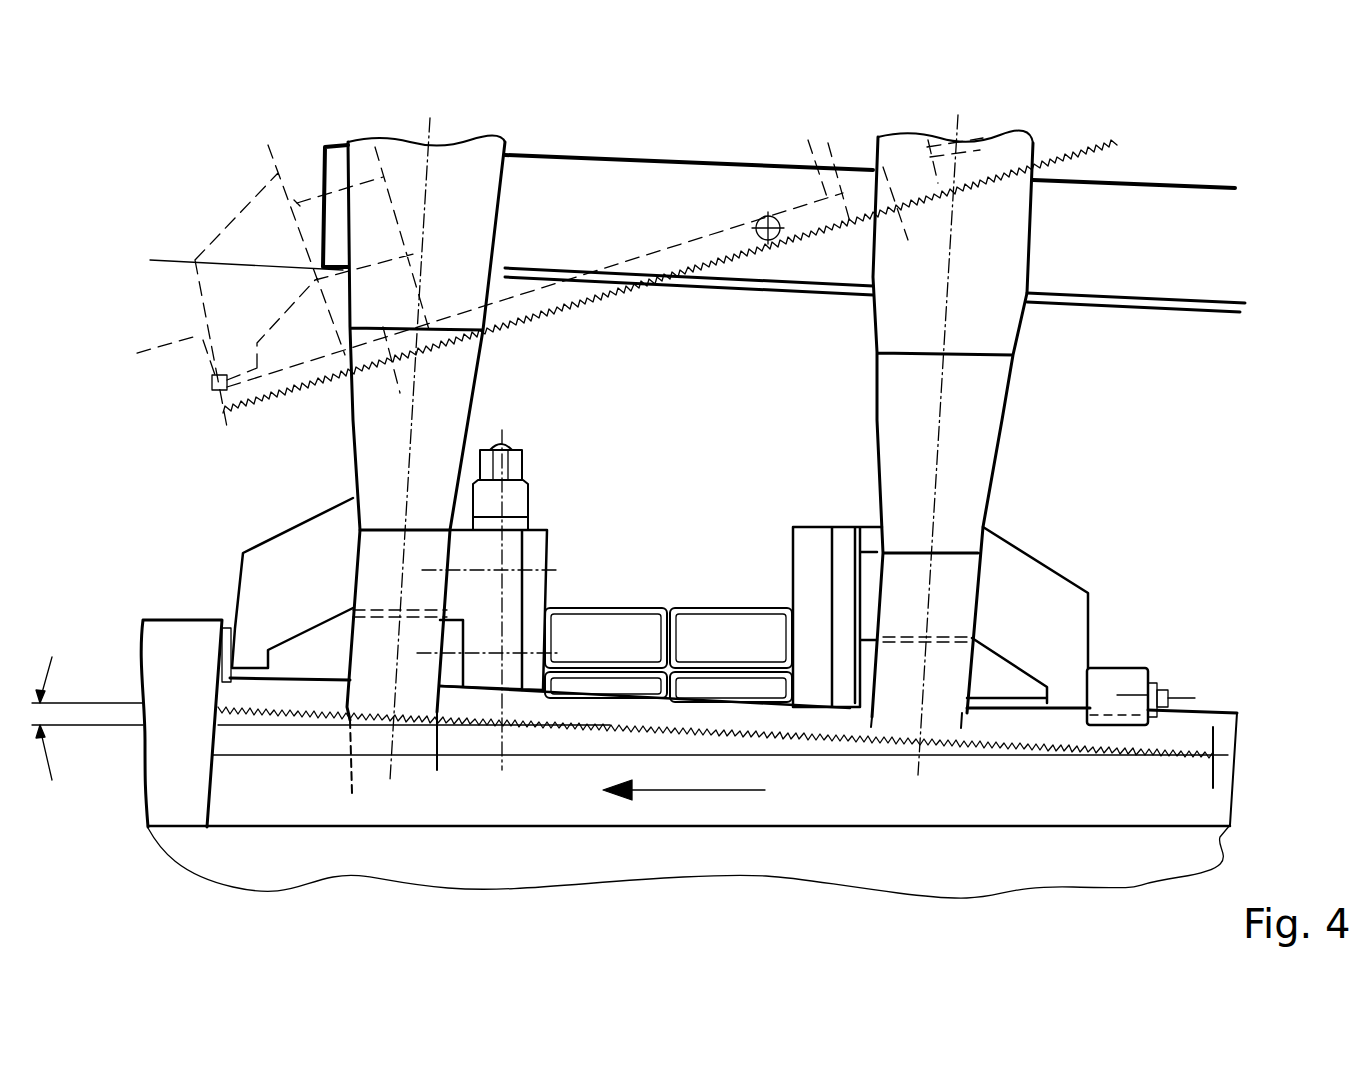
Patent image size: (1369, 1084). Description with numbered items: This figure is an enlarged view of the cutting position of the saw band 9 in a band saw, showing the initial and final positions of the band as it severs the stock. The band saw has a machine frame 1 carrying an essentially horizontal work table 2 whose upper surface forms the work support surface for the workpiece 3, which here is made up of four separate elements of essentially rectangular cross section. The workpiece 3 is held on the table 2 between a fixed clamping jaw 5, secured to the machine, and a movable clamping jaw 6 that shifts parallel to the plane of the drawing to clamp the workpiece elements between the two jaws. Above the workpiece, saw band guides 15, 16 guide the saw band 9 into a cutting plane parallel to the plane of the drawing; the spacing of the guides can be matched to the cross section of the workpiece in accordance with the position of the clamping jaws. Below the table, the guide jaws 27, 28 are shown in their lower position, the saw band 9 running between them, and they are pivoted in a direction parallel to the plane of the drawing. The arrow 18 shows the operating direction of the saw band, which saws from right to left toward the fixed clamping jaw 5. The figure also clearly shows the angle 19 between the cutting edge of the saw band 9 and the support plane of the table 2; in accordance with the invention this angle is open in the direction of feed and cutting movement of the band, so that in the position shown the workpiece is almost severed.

The machine frame 1 is at (310, 855).
The work table 2 is at (285, 758).
The workpiece 3 is at (640, 640).
The clamping jaw 5 is at (535, 546).
The clamping jaw 6 is at (812, 552).
The saw band 9 is at (833, 718).
The saw band guide 15 is at (457, 172).
The saw band guide 16 is at (977, 170).
The arrow 18 is at (697, 790).
The angle 19 is at (42, 717).
The guide jaw 27 is at (417, 695).
The guide jaw 28 is at (948, 717).